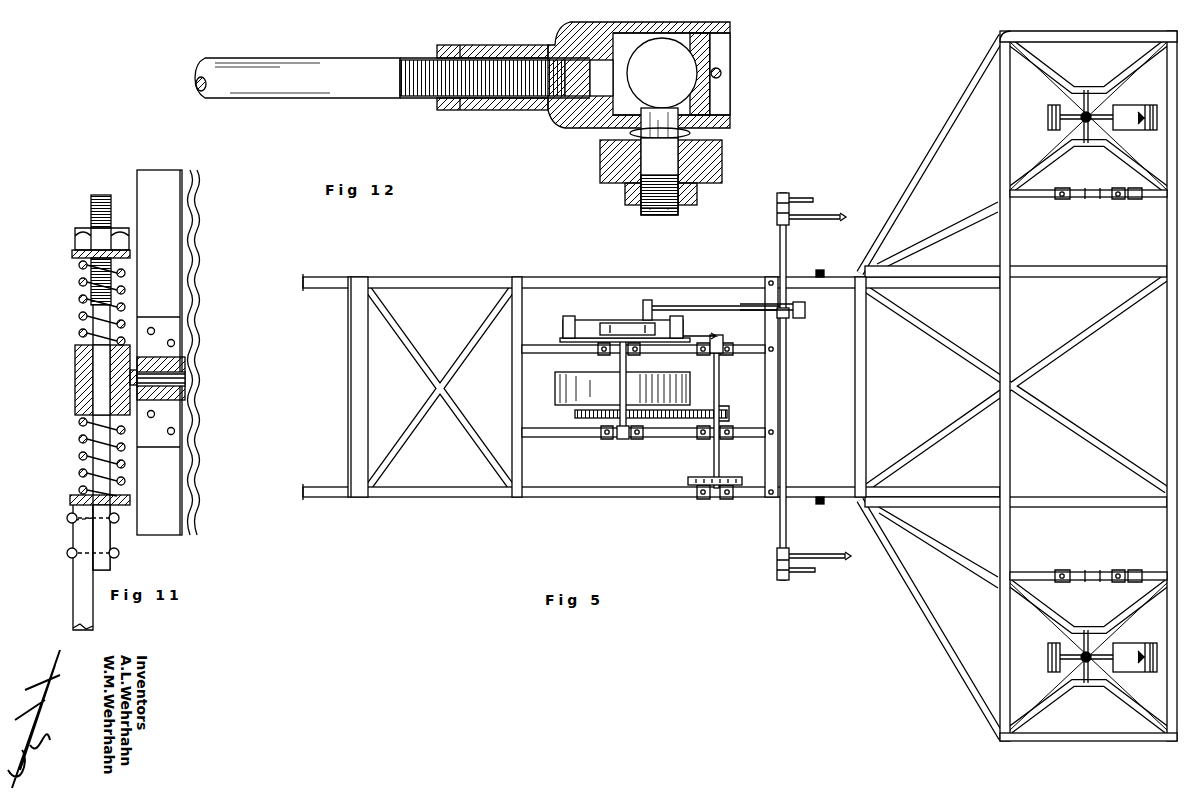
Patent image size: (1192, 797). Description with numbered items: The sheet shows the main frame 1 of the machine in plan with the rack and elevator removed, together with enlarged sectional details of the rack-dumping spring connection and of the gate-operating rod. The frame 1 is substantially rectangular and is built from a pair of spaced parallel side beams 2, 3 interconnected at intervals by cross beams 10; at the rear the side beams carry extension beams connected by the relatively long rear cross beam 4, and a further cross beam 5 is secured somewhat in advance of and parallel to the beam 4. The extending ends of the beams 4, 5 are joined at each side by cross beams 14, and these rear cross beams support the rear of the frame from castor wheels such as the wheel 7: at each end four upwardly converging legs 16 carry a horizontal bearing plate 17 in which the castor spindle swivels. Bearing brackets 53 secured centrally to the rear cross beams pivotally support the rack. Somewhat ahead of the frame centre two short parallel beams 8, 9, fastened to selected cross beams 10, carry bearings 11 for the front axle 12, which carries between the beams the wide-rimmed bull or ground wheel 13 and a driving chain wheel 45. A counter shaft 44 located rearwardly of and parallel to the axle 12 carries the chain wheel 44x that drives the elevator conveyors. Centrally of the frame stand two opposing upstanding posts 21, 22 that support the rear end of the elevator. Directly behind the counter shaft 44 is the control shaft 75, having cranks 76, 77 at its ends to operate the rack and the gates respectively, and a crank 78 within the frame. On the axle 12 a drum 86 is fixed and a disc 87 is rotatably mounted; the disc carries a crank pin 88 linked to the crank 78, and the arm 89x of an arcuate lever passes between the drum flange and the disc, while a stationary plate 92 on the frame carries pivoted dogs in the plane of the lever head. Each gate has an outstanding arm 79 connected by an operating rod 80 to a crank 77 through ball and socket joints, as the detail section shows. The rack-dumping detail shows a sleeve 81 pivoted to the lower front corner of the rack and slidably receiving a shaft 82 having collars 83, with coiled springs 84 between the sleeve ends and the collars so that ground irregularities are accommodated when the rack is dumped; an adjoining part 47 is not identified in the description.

In FIG. 12, the operating rod 80 is at (318, 68).
In FIG. 12, the outstanding arm 79 is at (605, 163).
In FIG. 11, the frame bar 47 is at (183, 306).
In FIG. 11, the shaft 82 is at (90, 303).
In FIG. 11, the collar 83 is at (72, 254).
In FIG. 11, the coiled spring 84 is at (82, 278).
In FIG. 11, the sleeve 81 is at (76, 370).
In FIG. 5, the side beam 2 is at (432, 282).
In FIG. 5, the side beam 3 is at (470, 498).
In FIG. 5, the cross beam 10 is at (510, 458).
In FIG. 5, the rear cross beam 4 is at (1167, 418).
In FIG. 5, the cross beam 5 is at (1000, 448).
In FIG. 5, the cross beam 14 is at (1109, 33).
In FIG. 5, the bearing bracket 53 is at (1080, 572).
In FIG. 5, the leg 16 is at (1135, 72).
In FIG. 5, the bearing plate 17 is at (1093, 135).
In FIG. 5, the short beam 9 is at (521, 352).
In FIG. 5, the short beam 8 is at (560, 440).
In FIG. 5, the bull or ground wheel 13 is at (622, 388).
In FIG. 5, the driving chain wheel 45 is at (575, 414).
In FIG. 5, the bearing 11 is at (614, 438).
In FIG. 5, the front axle 12 is at (628, 440).
In FIG. 5, the counter shaft 44 is at (712, 458).
In FIG. 5, the chain wheel 44x is at (700, 488).
In FIG. 5, the main frame 1 is at (632, 500).
In FIG. 5, the drum 86 is at (643, 342).
In FIG. 5, the disc 87 is at (582, 320).
In FIG. 5, the extending arm 89x is at (605, 318).
In FIG. 5, the crank pin 88 is at (650, 300).
In FIG. 5, the castor wheel 7 is at (633, 318).
In FIG. 5, the control shaft 75 is at (778, 538).
In FIG. 5, the crank 77 is at (812, 200).
In FIG. 5, the crank 76 is at (840, 220).
In FIG. 5, the crank 78 is at (800, 318).
In FIG. 5, the upstanding post 22 is at (824, 271).
In FIG. 5, the upstanding post 21 is at (823, 504).
In FIG. 5, the stationary plate 92 is at (583, 344).